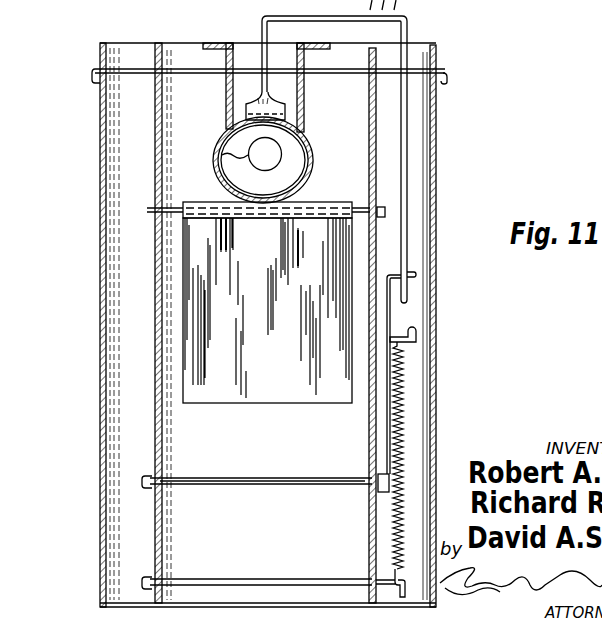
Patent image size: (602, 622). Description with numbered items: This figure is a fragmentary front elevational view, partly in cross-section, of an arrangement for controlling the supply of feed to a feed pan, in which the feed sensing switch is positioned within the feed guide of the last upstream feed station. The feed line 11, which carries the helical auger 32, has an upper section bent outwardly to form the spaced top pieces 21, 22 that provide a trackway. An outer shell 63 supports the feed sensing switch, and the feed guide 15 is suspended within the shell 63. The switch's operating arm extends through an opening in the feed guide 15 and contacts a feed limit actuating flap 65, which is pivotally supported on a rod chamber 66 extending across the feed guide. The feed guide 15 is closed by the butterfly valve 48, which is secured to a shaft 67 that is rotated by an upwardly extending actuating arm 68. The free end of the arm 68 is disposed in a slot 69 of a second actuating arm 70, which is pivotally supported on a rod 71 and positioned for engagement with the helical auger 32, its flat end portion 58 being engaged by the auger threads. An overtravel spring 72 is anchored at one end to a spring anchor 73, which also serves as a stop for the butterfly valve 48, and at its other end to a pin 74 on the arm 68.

The feed line 11 is at (214, 139).
The feed guide 15 is at (155, 152).
The top piece 21 is at (215, 43).
The top piece 22 is at (322, 78).
The helical auger 32 is at (265, 154).
The butterfly valve 48 is at (332, 474).
The flat end portion 58 is at (283, 113).
The outer shell 63 is at (100, 221).
The feed limit actuating flap 65 is at (205, 406).
The rod chamber 66 is at (170, 208).
The shaft 67 is at (293, 486).
The actuating arm 68 is at (389, 318).
The slot 69 is at (408, 272).
The actuating arm 70 is at (407, 115).
The rod 71 is at (445, 75).
The overtravel spring 72 is at (400, 379).
The spring anchor 73 is at (256, 580).
The pin 74 is at (418, 338).